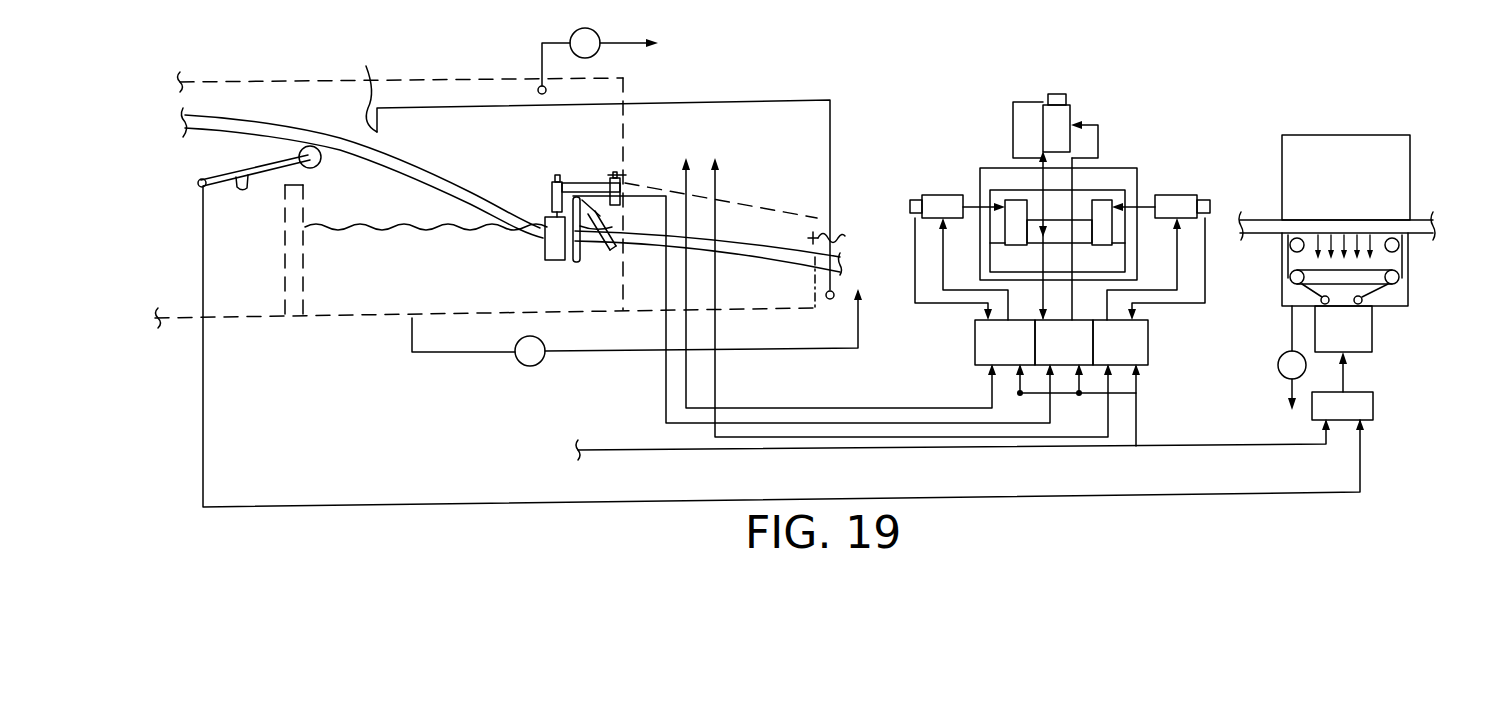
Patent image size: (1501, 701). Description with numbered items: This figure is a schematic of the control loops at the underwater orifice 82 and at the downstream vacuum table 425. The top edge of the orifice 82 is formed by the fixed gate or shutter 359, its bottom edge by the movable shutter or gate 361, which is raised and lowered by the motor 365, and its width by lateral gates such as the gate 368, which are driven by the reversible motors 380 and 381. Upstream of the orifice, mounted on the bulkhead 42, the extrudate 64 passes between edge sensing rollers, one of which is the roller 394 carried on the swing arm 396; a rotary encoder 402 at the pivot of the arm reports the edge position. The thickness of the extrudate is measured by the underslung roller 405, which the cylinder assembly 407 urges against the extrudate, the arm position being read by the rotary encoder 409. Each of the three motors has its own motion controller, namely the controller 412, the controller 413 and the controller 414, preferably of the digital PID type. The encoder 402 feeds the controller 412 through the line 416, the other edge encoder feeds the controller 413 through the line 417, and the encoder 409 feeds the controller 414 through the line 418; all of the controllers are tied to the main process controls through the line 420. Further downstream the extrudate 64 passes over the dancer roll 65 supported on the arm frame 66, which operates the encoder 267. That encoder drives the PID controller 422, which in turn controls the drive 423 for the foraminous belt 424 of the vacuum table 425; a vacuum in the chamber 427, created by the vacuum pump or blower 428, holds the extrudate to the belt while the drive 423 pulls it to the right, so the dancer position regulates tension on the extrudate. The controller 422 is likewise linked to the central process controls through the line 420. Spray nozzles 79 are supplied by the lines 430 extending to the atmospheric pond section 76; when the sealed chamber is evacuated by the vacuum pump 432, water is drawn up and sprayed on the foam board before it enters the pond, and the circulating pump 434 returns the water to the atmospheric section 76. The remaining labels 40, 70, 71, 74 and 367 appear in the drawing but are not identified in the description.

The printing unit enclosure 40 is at (400, 80).
The bulkhead 42 is at (625, 148).
The extrudate 64 is at (388, 158).
The dancer roll 65 is at (313, 147).
The arm frame 66 is at (250, 168).
The fountain solution 70 is at (421, 220).
The fountain reservoir 71 is at (333, 228).
The hose 74 is at (743, 200).
The atmospheric pond section 76 is at (842, 240).
The spray nozzles 79 is at (356, 90).
The underwater orifice 82 is at (1078, 204).
The encoder 267 is at (199, 187).
The fixed gate 359 is at (1037, 198).
The bottom gate 361 is at (1006, 254).
The motor 365 is at (1060, 115).
The left piston 367 is at (1013, 226).
The lateral gate 368 is at (1095, 228).
The reversible motor 380 is at (943, 195).
The reversible motor 381 is at (1172, 197).
The extrudate edge sensing roller 394 is at (548, 258).
The swing arm 396 is at (578, 184).
The rotary encoder 402 is at (613, 172).
The underslung roller 405 is at (582, 262).
The cylinder assembly 407 is at (608, 195).
The rotary encoder 409 is at (552, 190).
The motion controller 412 is at (990, 347).
The motion controller 413 is at (1130, 350).
The motion controller 414 is at (1075, 335).
The line 416 is at (790, 409).
The line 417 is at (865, 437).
The line 418 is at (733, 423).
The line 420 is at (645, 450).
The PID controller 422 is at (1373, 412).
The drive 423 is at (1355, 325).
The foraminous belt 424 is at (1403, 260).
The vacuum table 425 is at (1419, 211).
The vacuum chamber 427 is at (1390, 296).
The vacuum pump 428 is at (1278, 365).
The supply lines 430 is at (750, 100).
The vacuum pump 432 is at (588, 28).
The circulating pump 434 is at (545, 367).